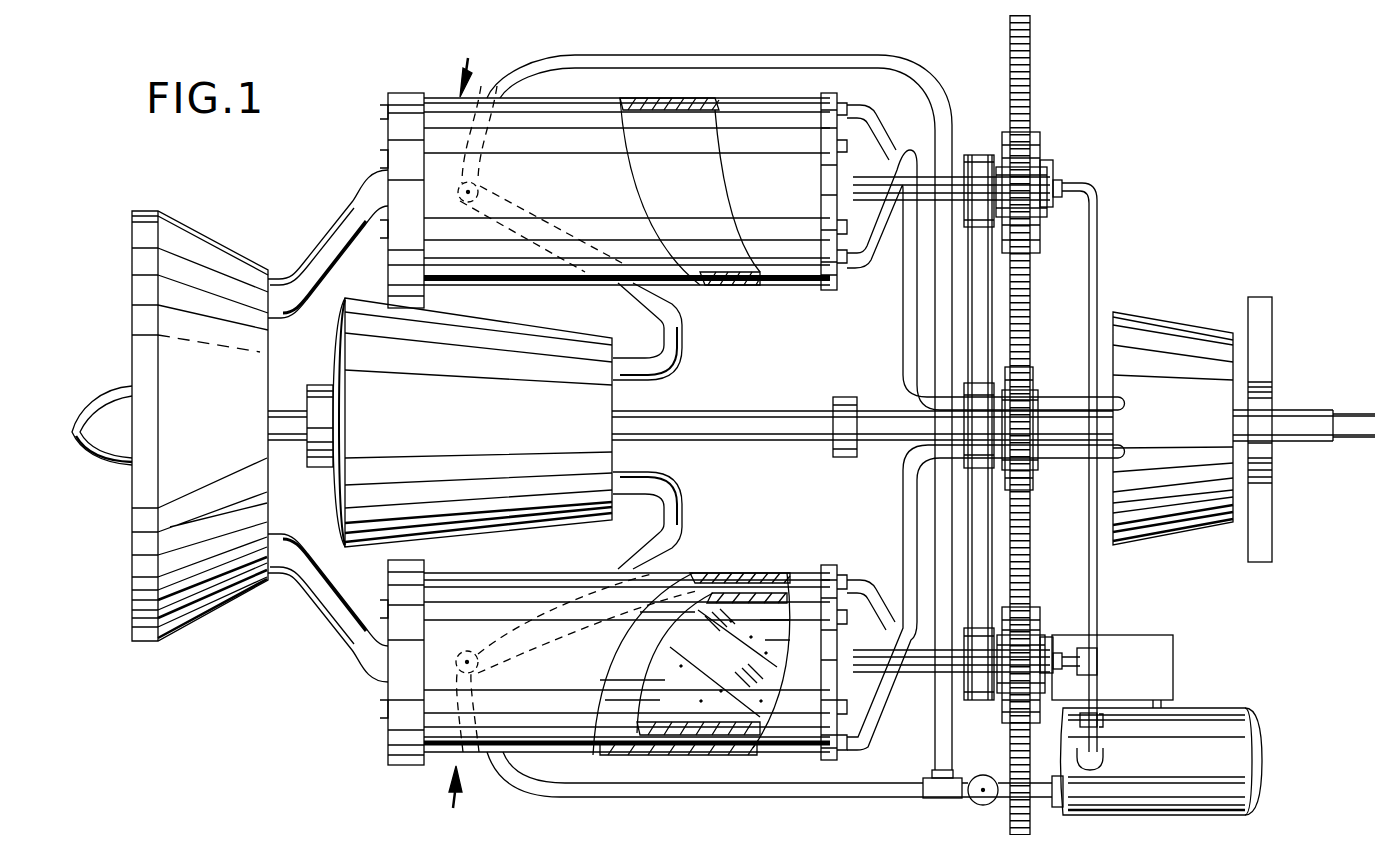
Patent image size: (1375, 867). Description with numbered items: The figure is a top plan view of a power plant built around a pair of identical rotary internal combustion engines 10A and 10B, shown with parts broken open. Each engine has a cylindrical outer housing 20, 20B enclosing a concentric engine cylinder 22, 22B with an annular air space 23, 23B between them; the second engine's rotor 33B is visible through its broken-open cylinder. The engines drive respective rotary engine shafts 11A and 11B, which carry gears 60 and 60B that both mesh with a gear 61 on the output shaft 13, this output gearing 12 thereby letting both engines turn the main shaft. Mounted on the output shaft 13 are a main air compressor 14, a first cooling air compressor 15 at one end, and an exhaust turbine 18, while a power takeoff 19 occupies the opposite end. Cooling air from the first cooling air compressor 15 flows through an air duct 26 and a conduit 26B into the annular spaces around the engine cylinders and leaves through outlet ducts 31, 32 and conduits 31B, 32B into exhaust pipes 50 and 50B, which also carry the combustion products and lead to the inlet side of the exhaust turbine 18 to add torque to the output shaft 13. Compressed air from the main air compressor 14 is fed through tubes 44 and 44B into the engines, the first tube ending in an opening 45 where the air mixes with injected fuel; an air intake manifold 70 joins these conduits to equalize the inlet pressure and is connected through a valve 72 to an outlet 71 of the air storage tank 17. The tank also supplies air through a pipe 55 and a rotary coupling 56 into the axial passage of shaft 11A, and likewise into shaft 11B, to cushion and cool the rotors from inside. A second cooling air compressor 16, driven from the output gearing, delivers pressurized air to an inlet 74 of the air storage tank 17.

The rotary internal combustion engine 10A is at (613, 173).
The rotary internal combustion engine 10B is at (613, 680).
The rotary engine shaft 11A is at (926, 178).
The rotary engine shaft 11B is at (962, 690).
The output gearing 12 is at (1056, 425).
The output shaft 13 is at (756, 441).
The main air compressor 14 is at (492, 426).
The first cooling air compressor 15 is at (185, 245).
The second cooling air compressor 16 is at (1140, 672).
The air storage tank 17 is at (1177, 768).
The exhaust turbine 18 is at (1192, 424).
The power takeoff 19 is at (1355, 410).
The cylindrical outer housing 20 is at (688, 106).
The outer housing 20B is at (750, 574).
The engine cylinder 22 is at (686, 194).
The engine cylinder 22B is at (670, 740).
The annular air space 23 is at (746, 286).
The annular air space 23B is at (732, 745).
The air duct 26 is at (330, 203).
The conduit 26B is at (325, 650).
The outlet duct 31 is at (866, 118).
The conduit 31B is at (866, 580).
The outlet duct 32 is at (873, 258).
The conduit 32B is at (888, 695).
The rotor 33B is at (688, 698).
The tube 44 is at (678, 352).
The tube 44B is at (684, 503).
The opening 45 is at (462, 189).
The exhaust pipe 50 is at (903, 322).
The exhaust pipe 50B is at (903, 480).
The pipe 55 is at (1100, 264).
The rotary coupling 56 is at (1062, 177).
The gear 60 is at (1032, 40).
The gear 60B is at (1032, 578).
The gear 61 is at (1040, 385).
The air intake manifold 70 is at (768, 57).
The outlet 71 is at (1058, 808).
The valve 72 is at (983, 806).
The inlet 74 is at (1165, 703).